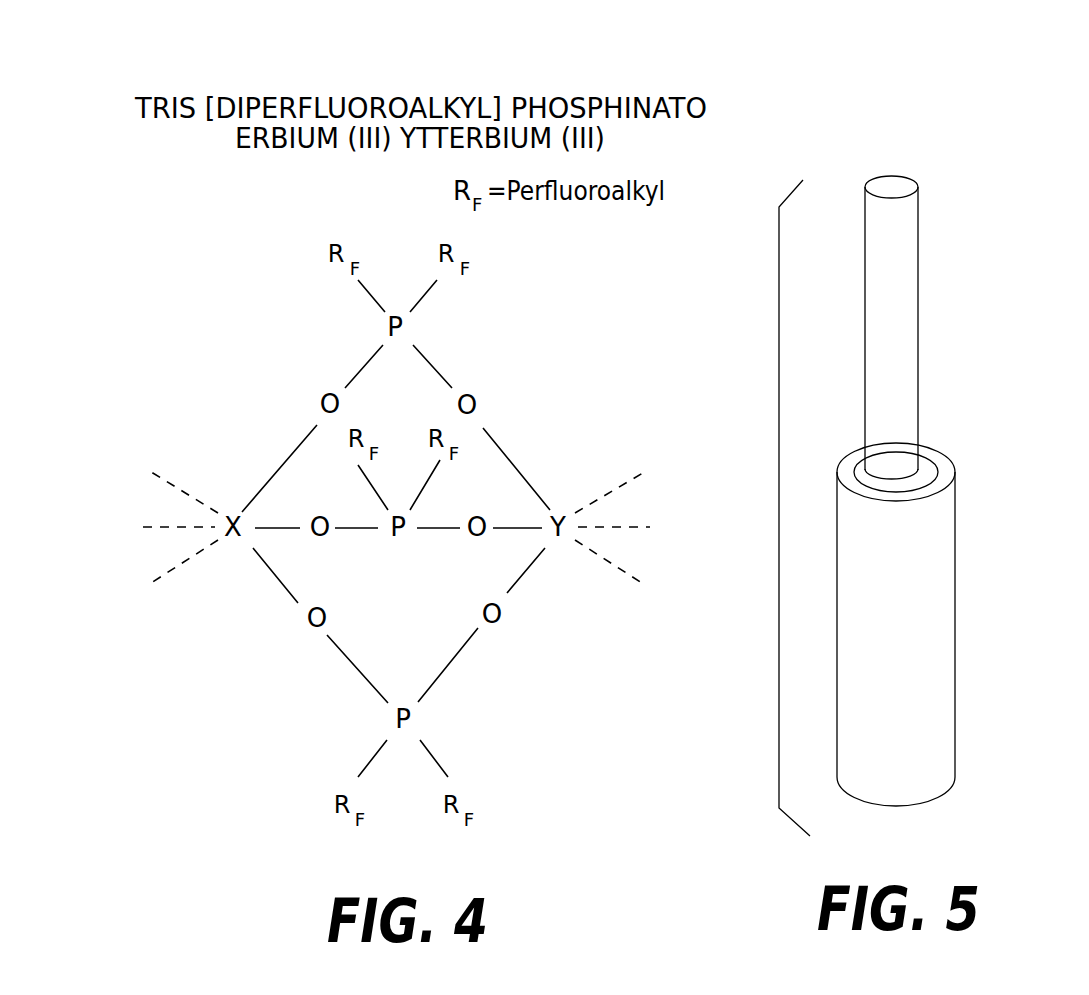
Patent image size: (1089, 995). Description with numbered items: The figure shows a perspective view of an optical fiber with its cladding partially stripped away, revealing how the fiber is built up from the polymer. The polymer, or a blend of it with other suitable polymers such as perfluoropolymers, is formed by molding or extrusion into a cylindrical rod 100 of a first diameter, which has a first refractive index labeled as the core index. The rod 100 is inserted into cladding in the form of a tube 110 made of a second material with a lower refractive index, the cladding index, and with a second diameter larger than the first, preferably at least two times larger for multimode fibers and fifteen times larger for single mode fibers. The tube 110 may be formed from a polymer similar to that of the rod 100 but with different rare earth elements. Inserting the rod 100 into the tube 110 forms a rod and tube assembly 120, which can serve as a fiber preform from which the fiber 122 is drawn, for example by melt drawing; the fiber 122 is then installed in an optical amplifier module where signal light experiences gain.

The cylindrical rod 100 is at (922, 312).
The tube 110 is at (959, 545).
The rod and tube assembly 120 is at (779, 460).
The fiber 122 is at (960, 634).